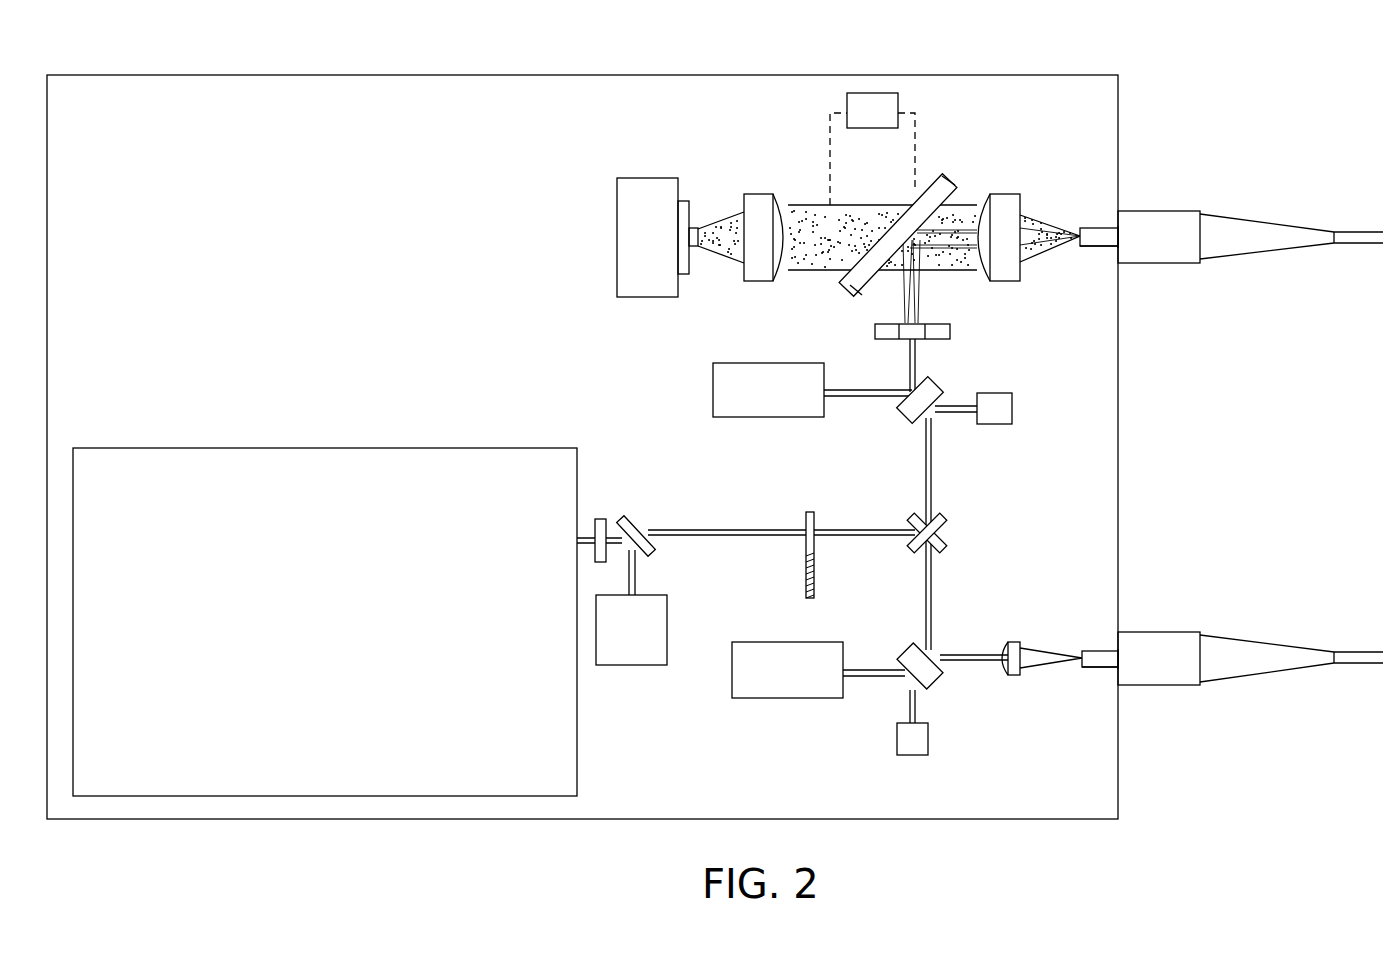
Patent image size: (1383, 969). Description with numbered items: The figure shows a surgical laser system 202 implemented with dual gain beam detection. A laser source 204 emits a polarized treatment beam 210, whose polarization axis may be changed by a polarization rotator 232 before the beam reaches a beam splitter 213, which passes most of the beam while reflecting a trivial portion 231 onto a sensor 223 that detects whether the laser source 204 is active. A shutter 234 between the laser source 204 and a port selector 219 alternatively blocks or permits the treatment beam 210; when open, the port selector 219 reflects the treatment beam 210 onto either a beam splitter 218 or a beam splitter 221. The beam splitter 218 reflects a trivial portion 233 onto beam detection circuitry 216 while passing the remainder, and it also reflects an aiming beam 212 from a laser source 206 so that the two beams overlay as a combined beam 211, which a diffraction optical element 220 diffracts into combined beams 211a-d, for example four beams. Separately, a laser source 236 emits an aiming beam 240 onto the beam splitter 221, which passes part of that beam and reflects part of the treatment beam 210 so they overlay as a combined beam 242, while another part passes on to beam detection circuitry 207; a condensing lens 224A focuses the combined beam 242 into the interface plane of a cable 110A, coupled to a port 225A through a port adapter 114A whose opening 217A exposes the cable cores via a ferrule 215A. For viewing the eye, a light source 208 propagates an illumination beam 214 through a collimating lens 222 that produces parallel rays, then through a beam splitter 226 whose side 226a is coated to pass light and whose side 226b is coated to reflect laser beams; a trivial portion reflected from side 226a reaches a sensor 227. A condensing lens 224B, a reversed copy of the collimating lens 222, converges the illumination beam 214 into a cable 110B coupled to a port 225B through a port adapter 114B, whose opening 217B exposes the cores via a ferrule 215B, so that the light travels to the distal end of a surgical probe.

The surgical laser system 202 is at (818, 75).
The laser source 204 is at (414, 448).
The laser source 206 is at (713, 390).
The beam detection circuitry 207 is at (912, 755).
The light source 208 is at (683, 201).
The treatment beam 210 is at (585, 535).
The combined beam 211 is at (917, 358).
The combined beams 211a-d is at (918, 290).
The aiming beam 212 is at (866, 390).
The beam splitter 213 is at (630, 520).
The illumination beam 214 is at (728, 218).
The ferrule 215A is at (1118, 650).
The ferrule 215B is at (1118, 226).
The beam detection circuitry 216 is at (1012, 408).
The opening 217A is at (1082, 660).
The opening 217B is at (1080, 228).
The beam splitter 218 is at (937, 385).
The port selector 219 is at (950, 528).
The diffraction optical element 220 is at (952, 326).
The beam splitter 221 is at (905, 650).
The collimating lens 222 is at (762, 194).
The sensor 223 is at (628, 665).
The condensing lens 224A is at (1012, 642).
The condensing lens 224B is at (1012, 194).
The port 225A is at (1115, 668).
The port 225B is at (1115, 248).
The beam splitter 226 is at (946, 178).
The side 226a is at (932, 186).
The side 226b is at (960, 195).
The sensor 227 is at (876, 93).
The trivial portion 231 is at (637, 572).
The polarization rotator 232 is at (602, 519).
The trivial portion 233 is at (955, 412).
The shutter 234 is at (810, 512).
The laser source 236 is at (790, 698).
The aiming beam 240 is at (876, 676).
The combined beam 242 is at (968, 662).
The cable 110A is at (1358, 652).
The cable 110B is at (1358, 232).
The port adapter 114A is at (1175, 632).
The port adapter 114B is at (1175, 211).